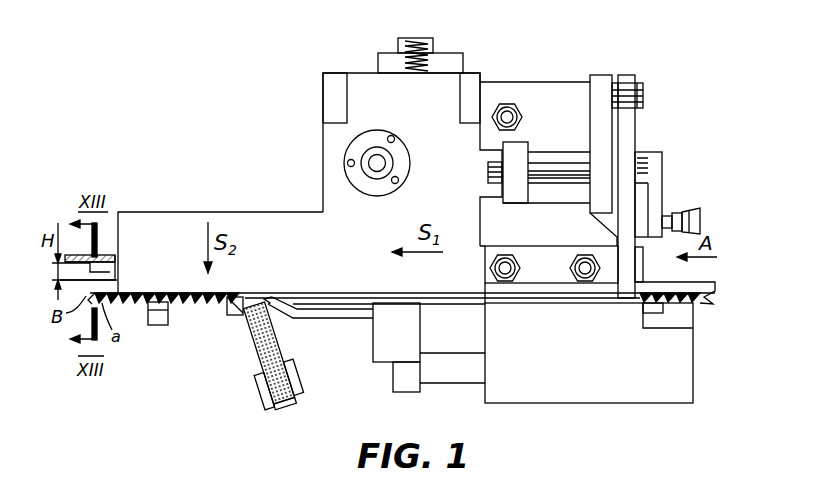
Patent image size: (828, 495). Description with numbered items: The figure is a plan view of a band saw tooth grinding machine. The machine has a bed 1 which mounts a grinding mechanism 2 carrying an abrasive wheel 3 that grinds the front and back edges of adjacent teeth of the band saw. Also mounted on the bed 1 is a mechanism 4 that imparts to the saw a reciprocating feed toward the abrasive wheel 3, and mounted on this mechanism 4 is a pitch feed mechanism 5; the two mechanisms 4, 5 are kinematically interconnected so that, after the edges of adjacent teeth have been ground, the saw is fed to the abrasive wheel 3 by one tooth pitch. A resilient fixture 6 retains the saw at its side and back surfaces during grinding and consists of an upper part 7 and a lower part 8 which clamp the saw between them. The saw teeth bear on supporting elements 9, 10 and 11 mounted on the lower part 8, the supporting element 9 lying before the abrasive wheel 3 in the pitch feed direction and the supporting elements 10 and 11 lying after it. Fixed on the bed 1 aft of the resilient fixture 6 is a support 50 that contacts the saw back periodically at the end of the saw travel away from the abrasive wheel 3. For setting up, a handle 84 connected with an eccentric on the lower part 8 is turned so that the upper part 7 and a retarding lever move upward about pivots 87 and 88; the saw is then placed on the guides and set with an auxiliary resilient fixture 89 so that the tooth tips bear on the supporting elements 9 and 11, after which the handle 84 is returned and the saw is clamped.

The bed 1 is at (112, 266).
The grinding mechanism 2 is at (291, 403).
The abrasive wheel 3 is at (259, 365).
The mechanism for imparting reciprocating feed 4 is at (556, 80).
The pitch feed mechanism 5 is at (583, 403).
The resilient fixture 6 is at (322, 182).
The upper part 7 is at (227, 212).
The lower part 8 is at (517, 92).
The supporting element 9 is at (681, 322).
The supporting element 10 is at (233, 317).
The supporting element 11 is at (158, 325).
The support 50 is at (87, 255).
The handle 84 is at (684, 216).
The pivot 87 is at (645, 88).
The pivot 88 is at (469, 95).
The auxiliary resilient fixture 89 is at (414, 45).